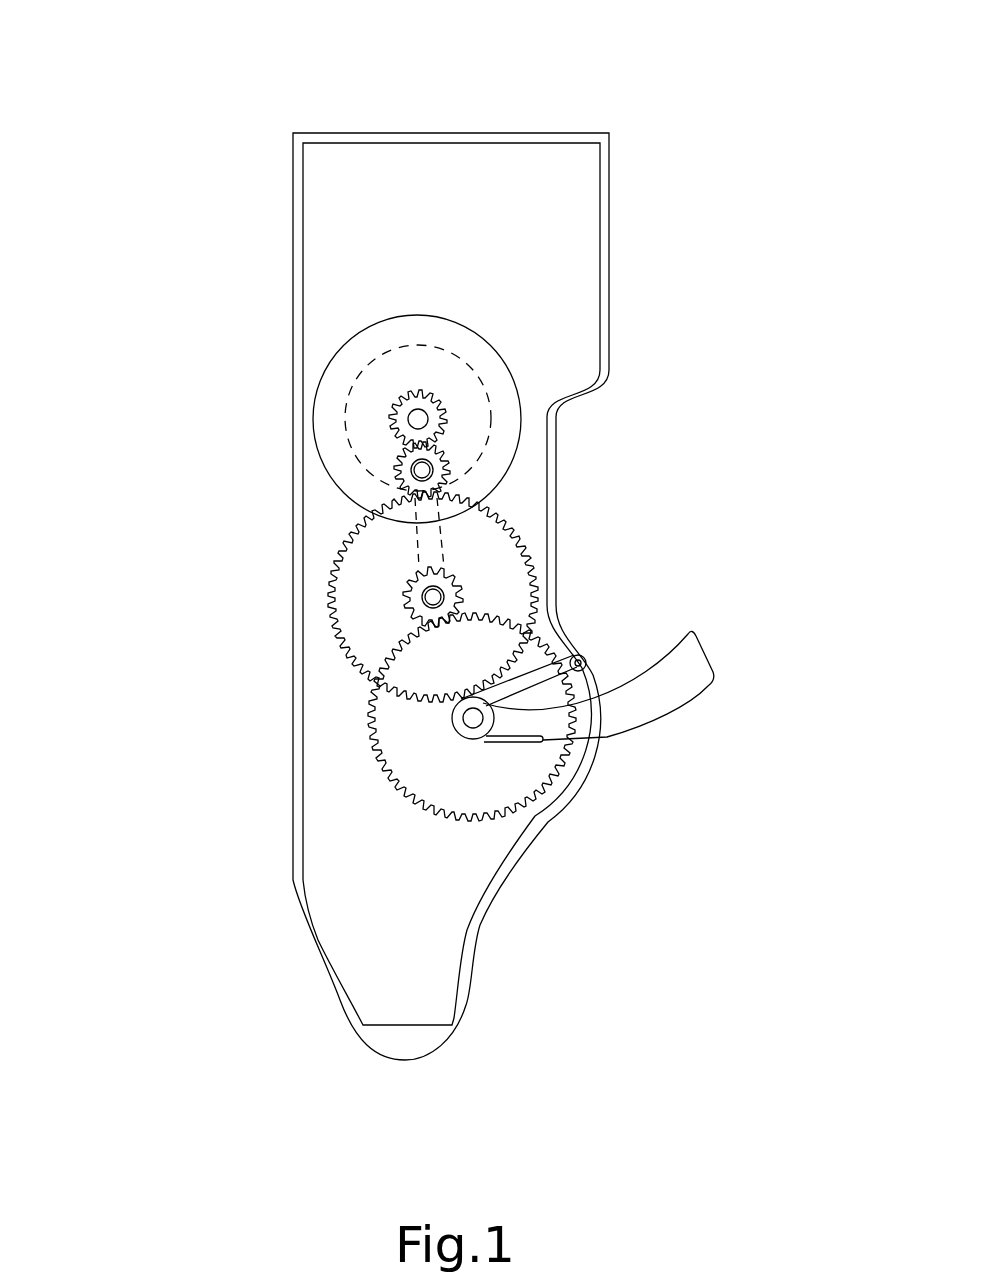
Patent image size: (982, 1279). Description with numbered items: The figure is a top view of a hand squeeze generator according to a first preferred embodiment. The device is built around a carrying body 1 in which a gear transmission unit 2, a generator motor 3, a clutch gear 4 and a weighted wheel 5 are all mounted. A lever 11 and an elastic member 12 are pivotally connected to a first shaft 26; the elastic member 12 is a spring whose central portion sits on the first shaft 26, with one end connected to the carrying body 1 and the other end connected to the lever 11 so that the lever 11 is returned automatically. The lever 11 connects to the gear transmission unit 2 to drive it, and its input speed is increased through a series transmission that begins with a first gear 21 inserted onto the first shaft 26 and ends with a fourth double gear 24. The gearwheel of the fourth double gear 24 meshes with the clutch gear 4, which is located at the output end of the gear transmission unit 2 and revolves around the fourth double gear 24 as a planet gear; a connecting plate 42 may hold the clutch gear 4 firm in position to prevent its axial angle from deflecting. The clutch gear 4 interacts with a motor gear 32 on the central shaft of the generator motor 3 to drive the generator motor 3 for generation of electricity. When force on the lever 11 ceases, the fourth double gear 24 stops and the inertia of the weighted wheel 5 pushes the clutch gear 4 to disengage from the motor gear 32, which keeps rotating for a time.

The carrying body 1 is at (648, 88).
The gear transmission unit 2 is at (368, 875).
The generator motor 3 is at (382, 372).
The motor gear 32 is at (390, 418).
The clutch gear 4 is at (393, 471).
The connecting plate 42 is at (425, 550).
The weighted wheel 5 is at (478, 352).
The fourth double gear 24 is at (372, 635).
The first gear 21 is at (390, 716).
The elastic member 12 is at (510, 680).
The lever 11 is at (673, 688).
The first shaft 26 is at (474, 720).